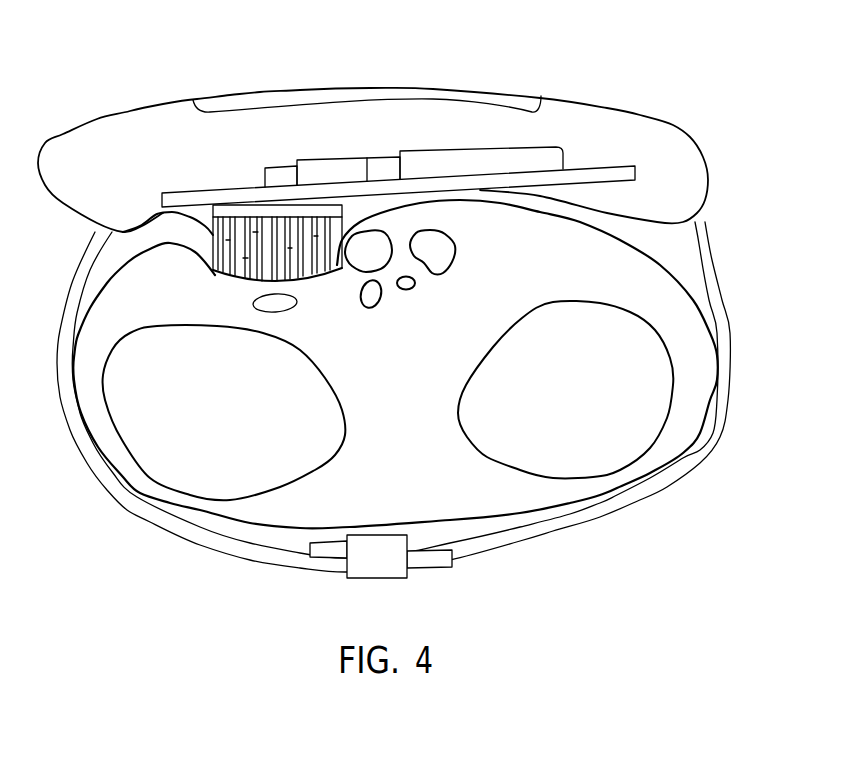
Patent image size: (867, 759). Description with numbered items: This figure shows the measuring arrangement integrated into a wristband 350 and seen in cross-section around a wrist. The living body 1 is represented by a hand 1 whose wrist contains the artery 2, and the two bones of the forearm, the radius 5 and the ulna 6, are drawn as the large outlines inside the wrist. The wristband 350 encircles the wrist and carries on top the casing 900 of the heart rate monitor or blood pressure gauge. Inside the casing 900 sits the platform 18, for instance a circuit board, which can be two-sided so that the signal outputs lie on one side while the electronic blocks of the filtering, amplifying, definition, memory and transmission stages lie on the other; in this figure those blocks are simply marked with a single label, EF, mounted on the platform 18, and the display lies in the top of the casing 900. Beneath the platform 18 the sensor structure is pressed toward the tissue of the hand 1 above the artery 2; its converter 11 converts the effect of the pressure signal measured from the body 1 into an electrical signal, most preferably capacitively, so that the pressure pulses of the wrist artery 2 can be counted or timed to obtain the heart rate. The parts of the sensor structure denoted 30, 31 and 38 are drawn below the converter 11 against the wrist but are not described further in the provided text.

The casing 900 is at (658, 137).
The platform 18 is at (187, 193).
The electronic functional block EF is at (433, 163).
The converter 11 is at (212, 212).
The living body 1 is at (172, 276).
The wristband 350 is at (713, 267).
The toothbrush 30 is at (232, 277).
The bristle field 31 is at (217, 277).
The bristle 38 is at (326, 273).
The artery 2 is at (289, 311).
The radius 5 is at (343, 442).
The ulna 6 is at (555, 300).